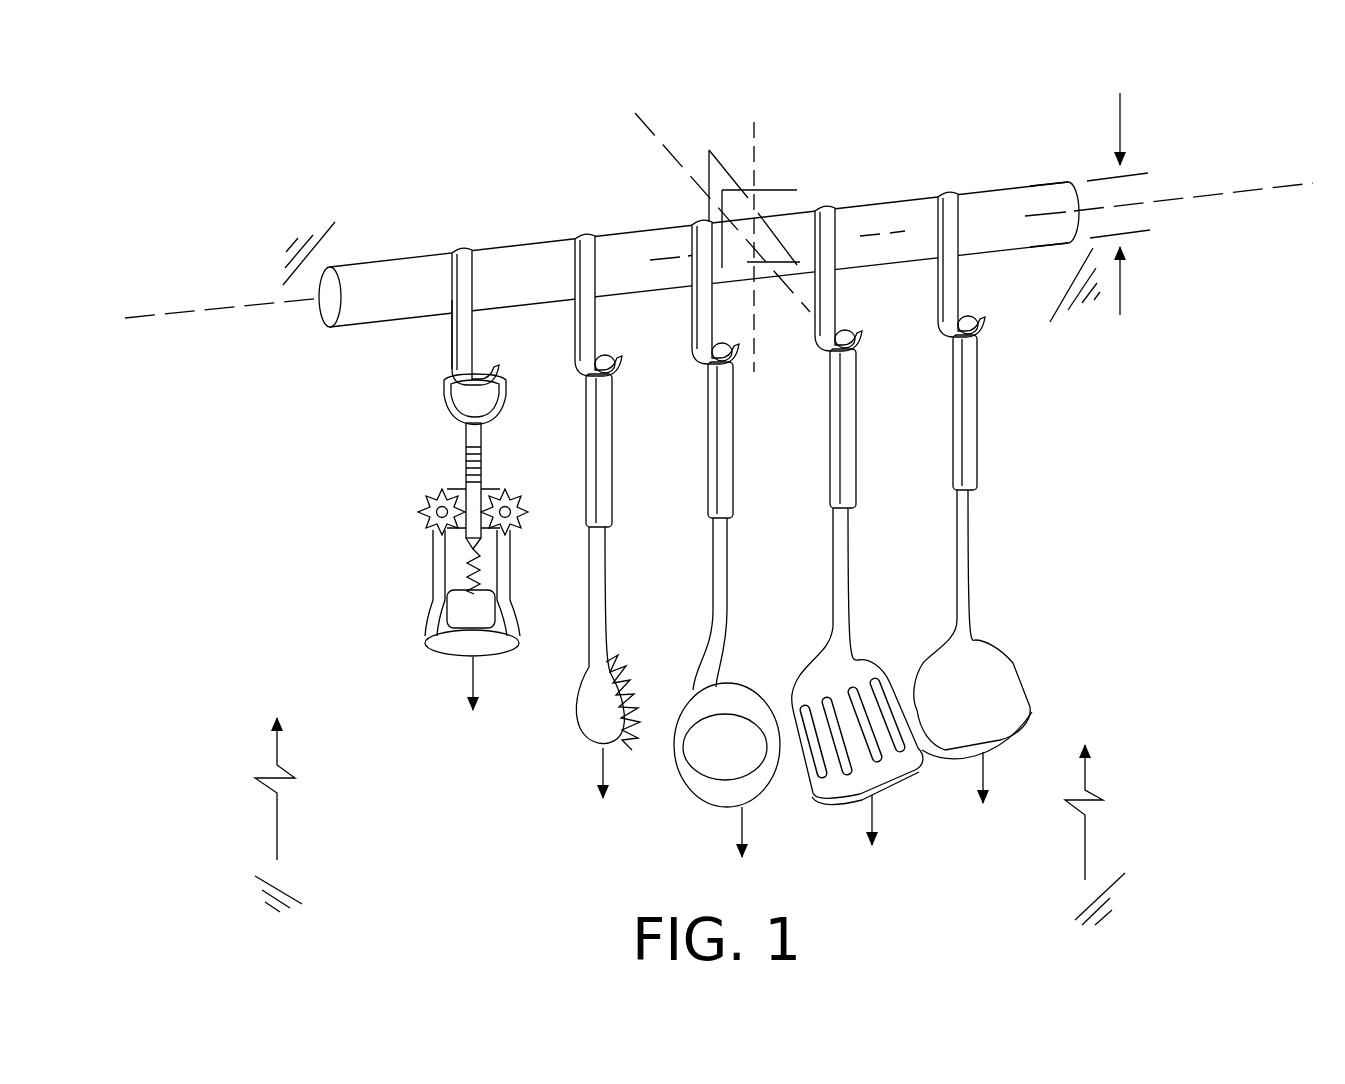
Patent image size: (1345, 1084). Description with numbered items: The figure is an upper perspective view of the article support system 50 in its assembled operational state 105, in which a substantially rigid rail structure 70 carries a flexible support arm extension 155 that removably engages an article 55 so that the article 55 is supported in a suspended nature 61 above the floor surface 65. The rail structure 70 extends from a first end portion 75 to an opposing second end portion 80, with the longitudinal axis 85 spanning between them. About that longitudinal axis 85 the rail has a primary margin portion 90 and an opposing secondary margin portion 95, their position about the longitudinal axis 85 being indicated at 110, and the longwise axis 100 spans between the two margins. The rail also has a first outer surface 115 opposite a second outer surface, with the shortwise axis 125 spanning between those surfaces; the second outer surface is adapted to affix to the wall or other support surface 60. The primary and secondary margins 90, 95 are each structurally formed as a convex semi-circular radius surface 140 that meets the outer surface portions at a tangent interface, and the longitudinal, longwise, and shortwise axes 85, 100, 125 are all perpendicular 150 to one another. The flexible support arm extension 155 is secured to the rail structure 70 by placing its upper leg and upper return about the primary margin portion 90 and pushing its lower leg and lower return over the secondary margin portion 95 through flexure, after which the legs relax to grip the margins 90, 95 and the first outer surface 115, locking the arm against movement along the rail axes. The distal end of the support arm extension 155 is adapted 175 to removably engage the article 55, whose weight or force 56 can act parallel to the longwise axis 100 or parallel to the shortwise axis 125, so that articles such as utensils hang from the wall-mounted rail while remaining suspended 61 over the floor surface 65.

The article support system 50 is at (1172, 84).
The assembled operational state 105 is at (1210, 128).
The substantially rigid rail structure 70 is at (1030, 198).
The first end portion of the rail structure 75 is at (372, 312).
The second end portion of the rail structure 80 is at (1007, 232).
The longitudinal axis of the rail structure 85 is at (192, 312).
The primary and secondary margin portions being about the longitudinal axis 110 is at (1120, 290).
The first outer surface of the rail structure 115 is at (411, 291).
The convex semi-circular radius surface 140 is at (732, 267).
The primary margin portion of the rail structure 90 is at (960, 196).
The secondary margin portion of the rail structure 95 is at (990, 256).
The flexible support arm extension 155 is at (450, 340).
The distal end portion adapted to removably engage the article 175 is at (447, 392).
The perpendicular position of the longitudinal, longwise, and shortwise axes 150 is at (722, 148).
The longwise axis of the rail structure 100 is at (758, 150).
The shortwise axis of the rail structure 125 is at (648, 118).
The article 55 is at (430, 645).
The weight or force of the article 56 is at (466, 685).
The wall or other support surface 60 is at (295, 240).
The suspended nature of the article 61 is at (272, 712).
The floor surface 65 is at (256, 878).